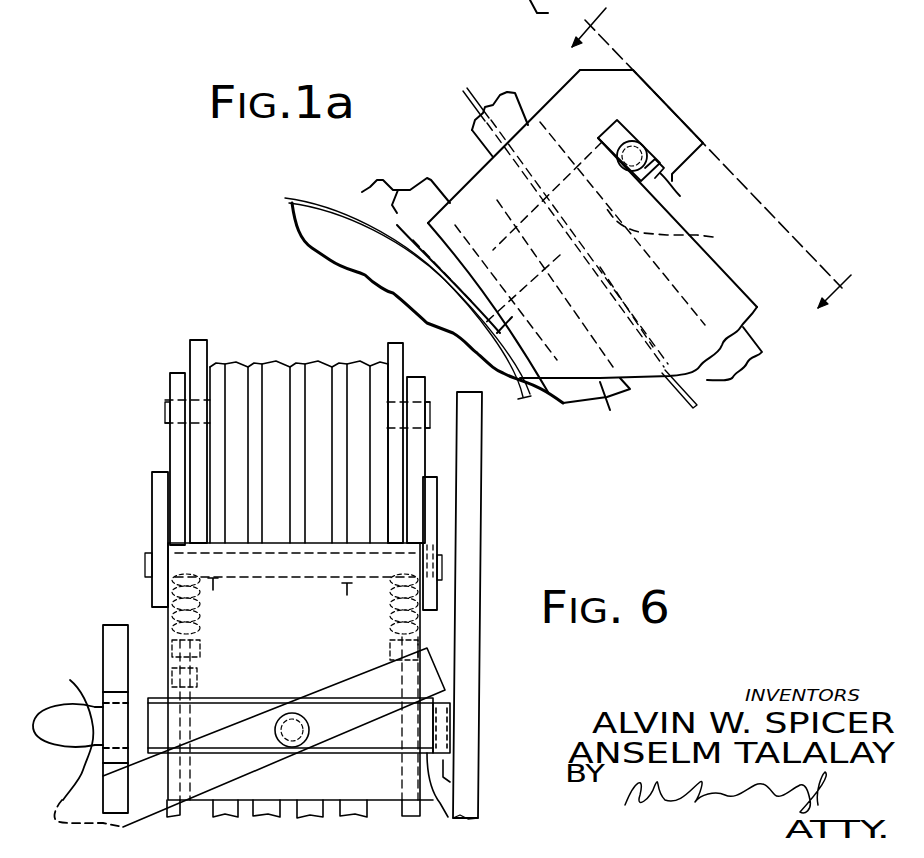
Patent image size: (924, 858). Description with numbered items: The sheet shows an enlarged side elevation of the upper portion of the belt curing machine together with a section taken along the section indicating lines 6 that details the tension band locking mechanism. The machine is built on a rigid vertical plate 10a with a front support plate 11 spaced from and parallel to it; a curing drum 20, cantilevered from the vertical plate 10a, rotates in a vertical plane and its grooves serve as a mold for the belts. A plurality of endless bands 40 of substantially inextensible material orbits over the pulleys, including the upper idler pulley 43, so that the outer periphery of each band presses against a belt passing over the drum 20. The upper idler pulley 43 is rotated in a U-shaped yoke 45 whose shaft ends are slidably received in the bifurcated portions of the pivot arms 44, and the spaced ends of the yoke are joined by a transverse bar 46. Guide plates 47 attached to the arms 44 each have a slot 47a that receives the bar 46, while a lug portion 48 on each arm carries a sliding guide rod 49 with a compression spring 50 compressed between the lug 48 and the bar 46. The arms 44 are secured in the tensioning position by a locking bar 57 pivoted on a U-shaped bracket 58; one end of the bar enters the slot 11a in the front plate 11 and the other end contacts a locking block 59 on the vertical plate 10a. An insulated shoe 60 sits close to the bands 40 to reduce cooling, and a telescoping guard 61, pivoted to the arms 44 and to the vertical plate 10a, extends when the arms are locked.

In FIG. 1A, the section indicating lines 6 is at (725, 154).
In FIG. 6, the vertical plate 10a is at (470, 453).
In FIG. 1A, the front support plate 11 is at (636, 90).
In FIG. 6, the front support plate 11 is at (117, 637).
In FIG. 1A, the slot 11a is at (677, 180).
In FIG. 1A, the curing drum 20 is at (313, 227).
In FIG. 1A, the endless bands 40 is at (520, 6).
In FIG. 6, the endless bands 40 is at (357, 362).
In FIG. 6, the upper idler pulley 43 is at (262, 362).
In FIG. 1A, the pivot arms 44 is at (683, 420).
In FIG. 6, the pivot arms 44 is at (178, 452).
In FIG. 6, the yoke 45 is at (200, 340).
In FIG. 6, the bar 46 is at (213, 583).
In FIG. 6, the guide plates 47 is at (158, 487).
In FIG. 6, the slot 47a is at (433, 533).
In FIG. 6, the lug portion 48 is at (383, 650).
In FIG. 6, the guide rod 49 is at (190, 670).
In FIG. 6, the compression spring 50 is at (393, 602).
In FIG. 1A, the locking bar 57 is at (661, 173).
In FIG. 6, the locking bar 57 is at (72, 684).
In FIG. 1A, the U-shaped bracket 58 is at (681, 231).
In FIG. 6, the U-shaped bracket 58 is at (482, 812).
In FIG. 6, the locking block 59 is at (450, 782).
In FIG. 1A, the insulated shoe 60 is at (545, 12).
In FIG. 1A, the telescoping guard 61 is at (750, 365).
In FIG. 6, the telescoping guard 61 is at (310, 682).